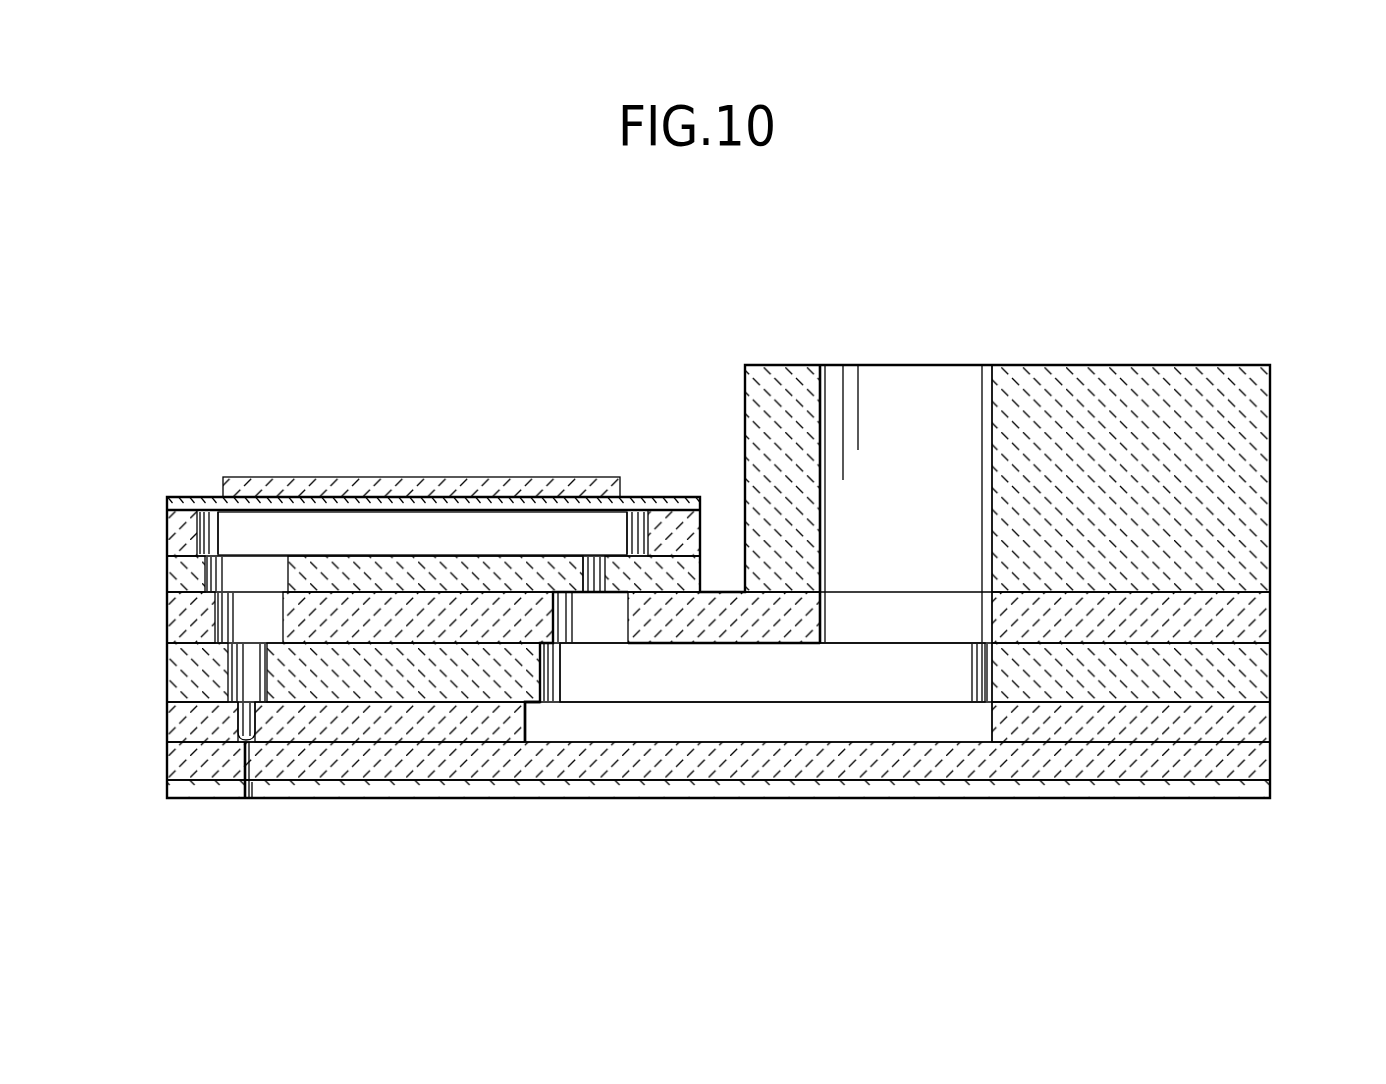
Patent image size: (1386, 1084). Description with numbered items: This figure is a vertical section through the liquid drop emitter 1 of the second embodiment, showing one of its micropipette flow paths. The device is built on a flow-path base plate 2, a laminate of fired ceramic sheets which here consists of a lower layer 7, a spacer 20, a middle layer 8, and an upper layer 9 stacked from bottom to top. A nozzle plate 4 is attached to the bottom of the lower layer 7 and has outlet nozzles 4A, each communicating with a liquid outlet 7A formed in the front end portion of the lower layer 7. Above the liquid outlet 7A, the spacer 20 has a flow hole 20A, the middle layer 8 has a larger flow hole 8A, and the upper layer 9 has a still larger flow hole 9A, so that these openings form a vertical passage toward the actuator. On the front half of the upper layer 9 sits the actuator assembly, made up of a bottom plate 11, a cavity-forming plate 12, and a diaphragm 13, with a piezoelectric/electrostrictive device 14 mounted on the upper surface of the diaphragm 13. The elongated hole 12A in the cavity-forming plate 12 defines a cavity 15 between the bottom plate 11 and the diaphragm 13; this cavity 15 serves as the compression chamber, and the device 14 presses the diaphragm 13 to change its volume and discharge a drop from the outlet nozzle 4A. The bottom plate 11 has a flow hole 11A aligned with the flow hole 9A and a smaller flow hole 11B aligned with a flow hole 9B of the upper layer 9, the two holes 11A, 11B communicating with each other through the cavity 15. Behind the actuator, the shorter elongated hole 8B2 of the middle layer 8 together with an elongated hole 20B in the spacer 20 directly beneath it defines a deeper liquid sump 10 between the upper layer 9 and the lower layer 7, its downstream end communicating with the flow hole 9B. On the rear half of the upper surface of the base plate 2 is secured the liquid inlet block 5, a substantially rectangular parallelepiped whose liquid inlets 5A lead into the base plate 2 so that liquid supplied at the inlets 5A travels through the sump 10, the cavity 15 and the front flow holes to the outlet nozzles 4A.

The liquid drop emitter 1 is at (985, 287).
The flow-path base plate 2 is at (325, 867).
The nozzle plate 4 is at (785, 800).
The outlet nozzles 4A is at (245, 802).
The liquid inlet block 5 is at (1233, 478).
The liquid inlets 5A is at (818, 408).
The lower layer 7 is at (512, 760).
The liquid outlets 7A is at (262, 800).
The middle layer 8 is at (402, 680).
The flow holes 8A is at (222, 655).
The elongated holes 8B2 is at (544, 672).
The upper layer 9 is at (345, 625).
The flow holes 9A is at (210, 605).
The flow holes 9B is at (630, 618).
The liquid sumps 10 is at (893, 672).
The bottom plate 11 is at (170, 570).
The flow holes 11A is at (272, 570).
The flow holes 11B is at (603, 570).
The cavity-forming plate 12 is at (175, 530).
The elongated holes 12A is at (650, 527).
The diaphragm 13 is at (167, 498).
The piezoelectric/electrostrictive devices 14 is at (255, 475).
The cavities 15 is at (418, 525).
The spacer 20 is at (468, 715).
The flow holes 20A is at (228, 710).
The elongated holes 20B is at (530, 728).